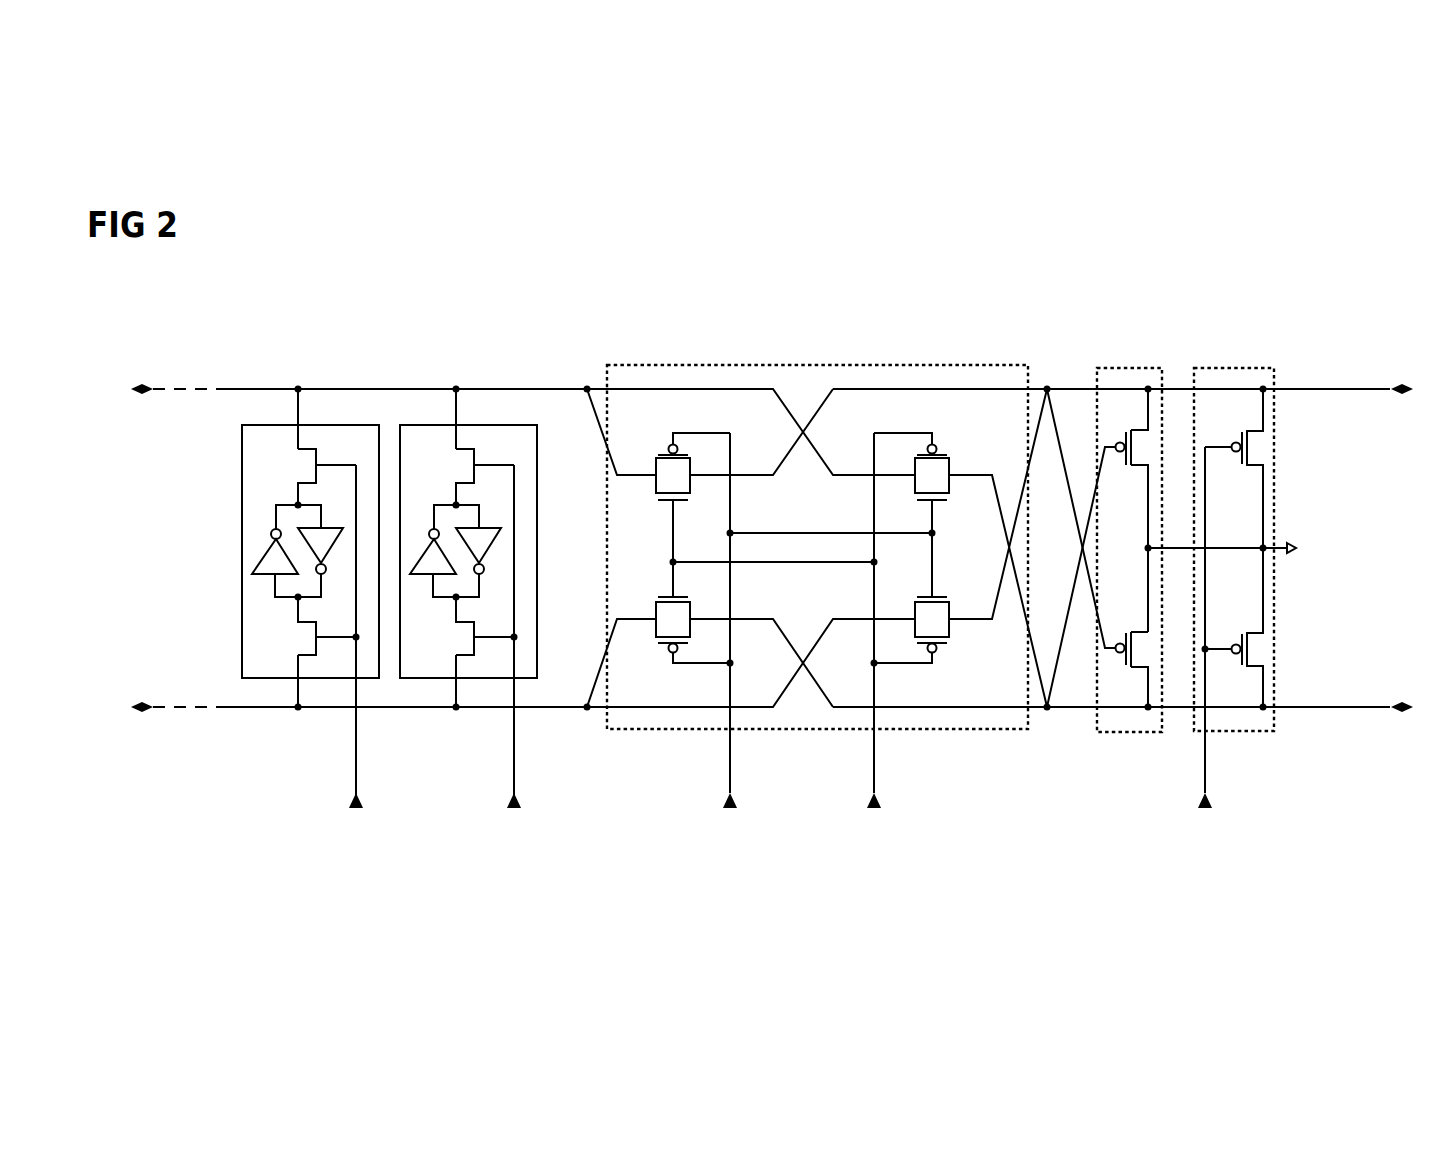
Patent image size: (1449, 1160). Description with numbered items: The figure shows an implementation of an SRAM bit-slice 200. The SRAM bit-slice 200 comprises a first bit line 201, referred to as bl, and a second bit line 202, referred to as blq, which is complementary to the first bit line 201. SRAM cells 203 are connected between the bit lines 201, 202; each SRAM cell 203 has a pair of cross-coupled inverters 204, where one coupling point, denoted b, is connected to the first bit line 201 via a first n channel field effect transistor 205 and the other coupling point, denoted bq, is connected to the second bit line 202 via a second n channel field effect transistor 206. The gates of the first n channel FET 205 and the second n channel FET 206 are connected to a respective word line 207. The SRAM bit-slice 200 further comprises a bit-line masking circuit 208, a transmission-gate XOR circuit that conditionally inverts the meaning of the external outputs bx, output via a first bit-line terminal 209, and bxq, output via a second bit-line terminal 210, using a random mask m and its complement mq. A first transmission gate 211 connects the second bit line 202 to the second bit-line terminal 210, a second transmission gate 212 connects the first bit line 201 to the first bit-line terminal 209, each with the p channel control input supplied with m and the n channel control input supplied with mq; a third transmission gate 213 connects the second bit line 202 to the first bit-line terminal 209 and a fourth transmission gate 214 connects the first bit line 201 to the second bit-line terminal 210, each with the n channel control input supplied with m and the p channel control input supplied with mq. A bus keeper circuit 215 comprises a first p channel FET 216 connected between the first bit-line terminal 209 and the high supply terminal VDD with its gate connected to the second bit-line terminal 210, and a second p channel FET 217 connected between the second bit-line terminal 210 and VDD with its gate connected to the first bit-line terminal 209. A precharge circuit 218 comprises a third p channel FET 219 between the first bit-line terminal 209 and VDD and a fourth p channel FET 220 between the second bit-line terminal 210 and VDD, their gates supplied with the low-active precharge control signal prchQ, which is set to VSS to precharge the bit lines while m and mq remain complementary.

The SRAM bit-slice 200 is at (1263, 268).
The first bit line 201 is at (251, 390).
The second bit line 202 is at (258, 708).
The SRAM cell 203 is at (338, 425).
The cross-coupled inverters 204 is at (292, 521).
The first n channel field effect transistor 205 is at (300, 456).
The second n channel field effect transistor 206 is at (300, 643).
The word line 207 is at (357, 775).
The bit-line masking circuit 208 is at (987, 363).
The first bit-line terminal 209 is at (1353, 389).
The second bit-line terminal 210 is at (1353, 707).
The first transmission gate 211 is at (697, 603).
The second transmission gate 212 is at (692, 503).
The third transmission gate 213 is at (942, 652).
The fourth transmission gate 214 is at (918, 505).
The bus keeper circuit 215 is at (1137, 735).
The first p channel FET 216 is at (1128, 425).
The second p channel FET 217 is at (1138, 672).
The precharge circuit 218 is at (1267, 363).
The third p channel FET 219 is at (1264, 455).
The fourth p channel FET 220 is at (1264, 657).